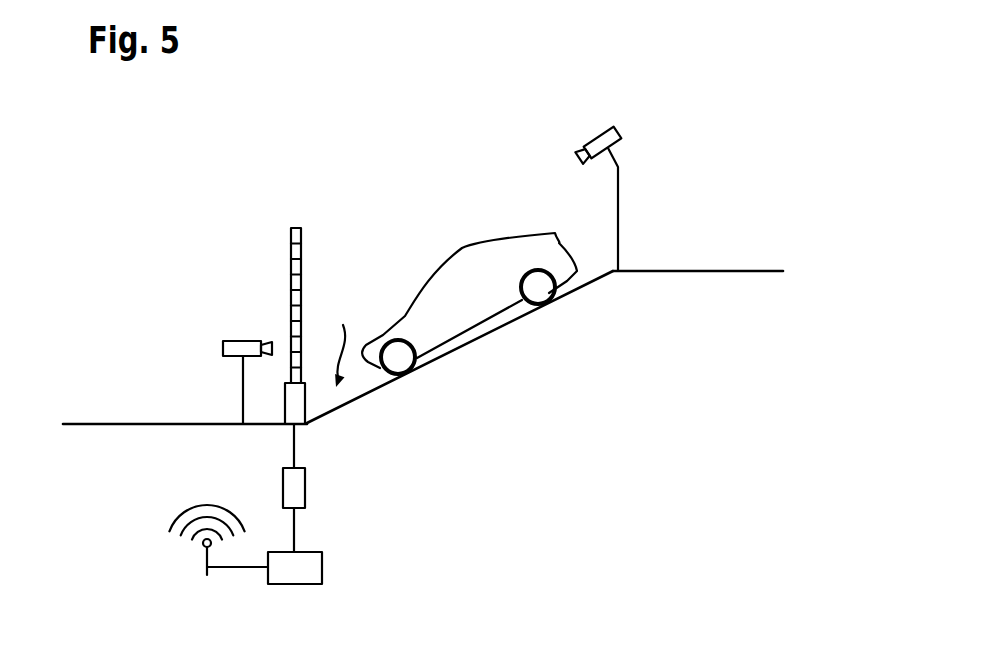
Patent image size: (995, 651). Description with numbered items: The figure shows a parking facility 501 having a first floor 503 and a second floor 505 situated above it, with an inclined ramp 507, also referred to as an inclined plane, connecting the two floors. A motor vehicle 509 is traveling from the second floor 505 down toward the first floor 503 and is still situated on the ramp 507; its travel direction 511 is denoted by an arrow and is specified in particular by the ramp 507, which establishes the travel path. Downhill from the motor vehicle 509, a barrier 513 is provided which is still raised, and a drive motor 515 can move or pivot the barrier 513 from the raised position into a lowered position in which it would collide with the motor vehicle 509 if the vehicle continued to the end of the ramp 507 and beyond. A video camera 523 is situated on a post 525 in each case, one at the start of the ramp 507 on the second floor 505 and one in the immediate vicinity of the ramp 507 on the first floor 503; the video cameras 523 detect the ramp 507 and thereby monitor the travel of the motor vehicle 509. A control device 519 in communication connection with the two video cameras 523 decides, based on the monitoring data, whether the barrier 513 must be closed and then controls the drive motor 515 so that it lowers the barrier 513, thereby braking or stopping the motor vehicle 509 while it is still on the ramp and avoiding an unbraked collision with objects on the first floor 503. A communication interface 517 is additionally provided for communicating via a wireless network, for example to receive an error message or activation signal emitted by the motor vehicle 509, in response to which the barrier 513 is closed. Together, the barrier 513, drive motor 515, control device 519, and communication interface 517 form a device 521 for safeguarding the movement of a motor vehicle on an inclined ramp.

The parking facility 501 is at (668, 430).
The first floor 503 is at (101, 401).
The second floor 505 is at (728, 169).
The inclined ramp 507 is at (489, 334).
The motor vehicle 509 is at (463, 253).
The travel direction 511 is at (340, 341).
The barrier 513 is at (290, 277).
The drive motor 515 is at (306, 488).
The communication interface 517 is at (207, 563).
The control device 519 is at (323, 567).
The device for safeguarding a movement of a motor vehicle 521 is at (411, 522).
The video camera 523 is at (222, 348).
The post 525 is at (243, 388).